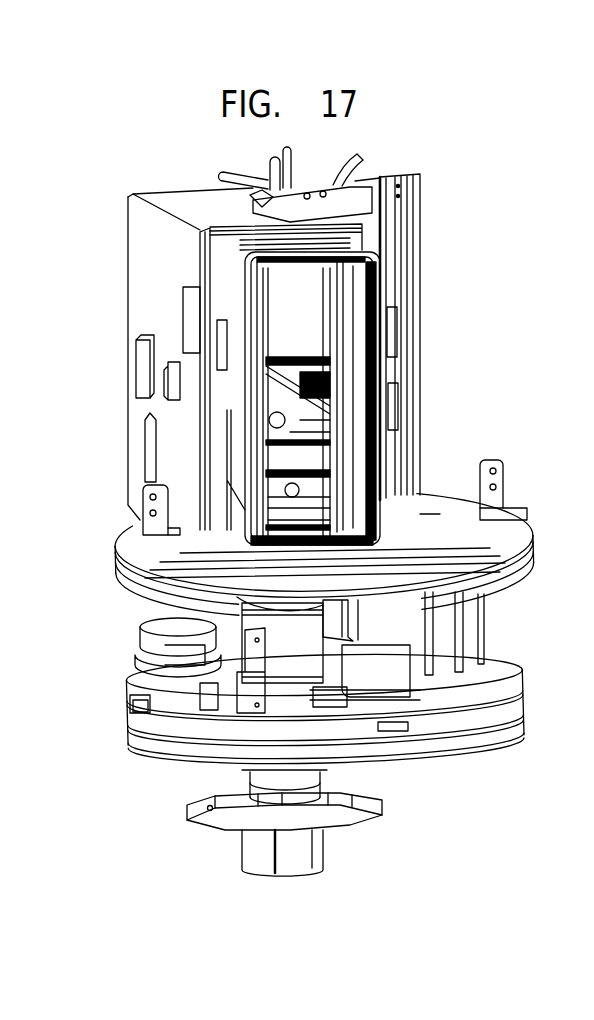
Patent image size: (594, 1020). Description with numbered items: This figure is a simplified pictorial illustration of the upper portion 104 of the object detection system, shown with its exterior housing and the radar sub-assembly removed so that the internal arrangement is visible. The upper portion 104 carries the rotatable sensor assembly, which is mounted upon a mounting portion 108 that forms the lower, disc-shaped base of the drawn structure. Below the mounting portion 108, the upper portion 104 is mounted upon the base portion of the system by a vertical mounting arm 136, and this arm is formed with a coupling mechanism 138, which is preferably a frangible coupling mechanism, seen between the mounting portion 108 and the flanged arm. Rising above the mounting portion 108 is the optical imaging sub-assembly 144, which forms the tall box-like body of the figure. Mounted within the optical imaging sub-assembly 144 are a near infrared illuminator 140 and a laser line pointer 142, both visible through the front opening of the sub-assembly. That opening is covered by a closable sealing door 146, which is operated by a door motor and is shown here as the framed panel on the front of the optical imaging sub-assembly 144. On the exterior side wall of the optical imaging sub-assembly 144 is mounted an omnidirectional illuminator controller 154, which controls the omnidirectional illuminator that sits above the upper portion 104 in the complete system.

The upper portion 104 is at (468, 292).
The mounting portion 108 is at (103, 538).
The vertical mounting arm 136 is at (360, 843).
The coupling mechanism 138 is at (243, 772).
The near infrared illuminator 140 is at (273, 420).
The laser line pointer 142 is at (262, 486).
The optical imaging sub-assembly 144 is at (150, 252).
The closable sealing door 146 is at (350, 303).
The omnidirectional illuminator controller 154 is at (136, 345).